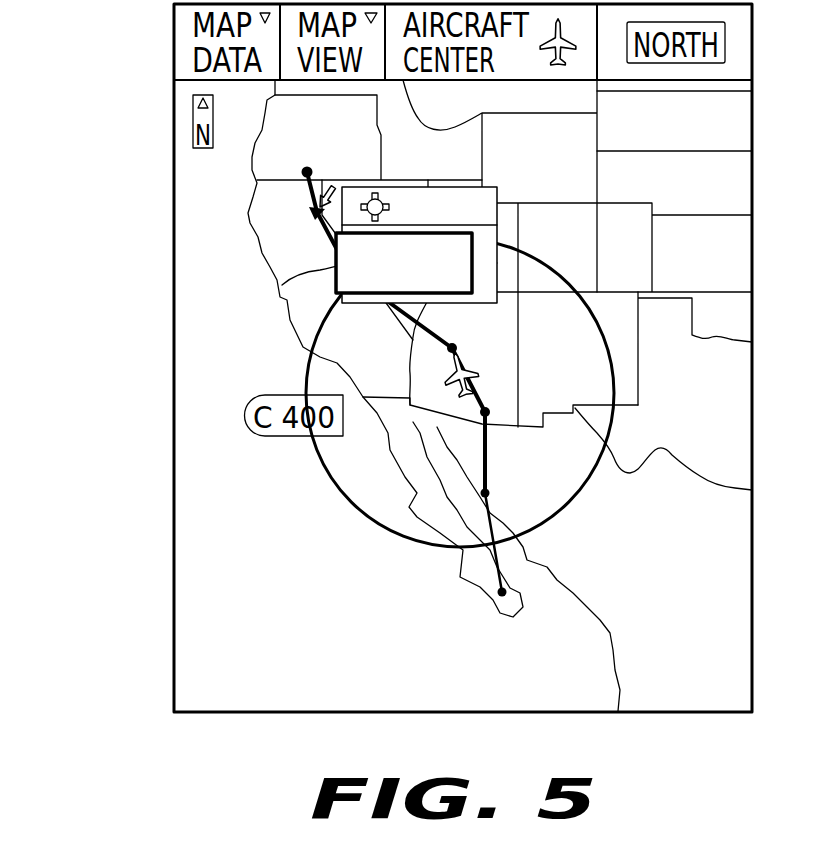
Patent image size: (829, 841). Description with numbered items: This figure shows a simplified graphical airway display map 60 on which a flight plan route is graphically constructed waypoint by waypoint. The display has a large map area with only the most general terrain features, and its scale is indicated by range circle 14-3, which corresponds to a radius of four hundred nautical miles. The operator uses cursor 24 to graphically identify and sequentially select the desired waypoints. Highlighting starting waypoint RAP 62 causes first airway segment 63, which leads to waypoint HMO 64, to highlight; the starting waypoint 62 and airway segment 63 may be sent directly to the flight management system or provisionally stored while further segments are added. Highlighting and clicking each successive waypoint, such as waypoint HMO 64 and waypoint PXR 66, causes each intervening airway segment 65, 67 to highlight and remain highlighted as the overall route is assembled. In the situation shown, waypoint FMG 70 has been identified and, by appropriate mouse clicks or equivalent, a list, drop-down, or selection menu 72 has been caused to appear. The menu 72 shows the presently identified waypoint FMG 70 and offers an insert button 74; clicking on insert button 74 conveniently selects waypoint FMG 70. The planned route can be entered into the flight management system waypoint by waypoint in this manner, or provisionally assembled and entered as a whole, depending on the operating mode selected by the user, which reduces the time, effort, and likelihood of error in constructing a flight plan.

The graphical airway display map 60 is at (88, 696).
The cursor 24 is at (327, 173).
The waypoint FMG 70 is at (312, 212).
The drop-down or selection menu 72 is at (495, 193).
The insert button 74 is at (282, 285).
The airway segment 67 is at (417, 337).
The waypoint PXR 66 is at (458, 348).
The airway segment 65 is at (488, 450).
The waypoint HMO 64 is at (490, 492).
The first airway segment 63 is at (532, 562).
The starting waypoint RAP 62 is at (497, 600).
The range circle 14-3 is at (352, 512).